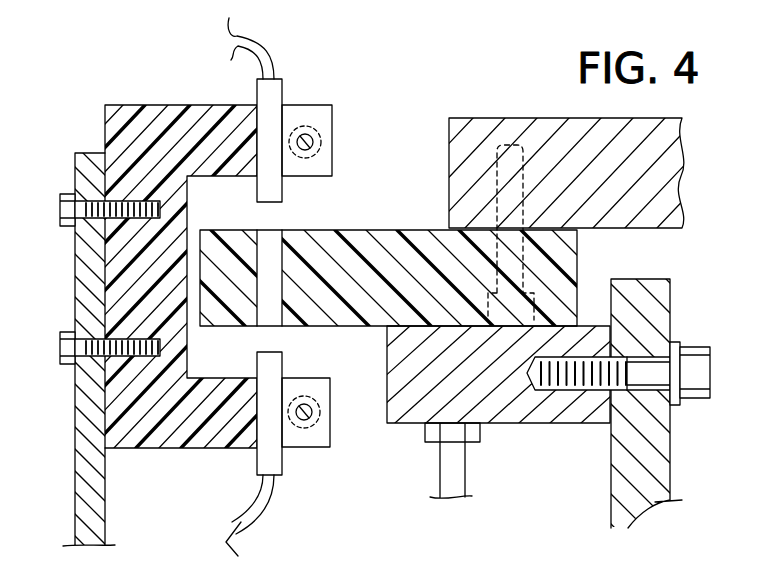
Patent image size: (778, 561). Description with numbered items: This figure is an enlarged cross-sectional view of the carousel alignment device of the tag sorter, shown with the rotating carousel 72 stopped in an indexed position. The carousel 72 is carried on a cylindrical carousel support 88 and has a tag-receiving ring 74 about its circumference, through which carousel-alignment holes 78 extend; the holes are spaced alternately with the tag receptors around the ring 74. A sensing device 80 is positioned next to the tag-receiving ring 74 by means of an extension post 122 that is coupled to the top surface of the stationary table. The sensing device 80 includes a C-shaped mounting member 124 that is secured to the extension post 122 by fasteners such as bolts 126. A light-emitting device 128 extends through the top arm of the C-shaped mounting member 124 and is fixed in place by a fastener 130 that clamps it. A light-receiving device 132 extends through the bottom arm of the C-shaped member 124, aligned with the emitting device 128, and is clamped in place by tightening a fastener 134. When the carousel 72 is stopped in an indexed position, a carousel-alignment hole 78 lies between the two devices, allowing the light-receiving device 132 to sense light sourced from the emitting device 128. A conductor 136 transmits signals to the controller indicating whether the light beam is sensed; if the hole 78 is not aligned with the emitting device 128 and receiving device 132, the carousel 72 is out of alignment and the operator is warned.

The rotating carousel 72 is at (477, 133).
The tag-receiving ring 74 is at (578, 262).
The carousel-alignment hole 78 is at (277, 247).
The sensing device 80 is at (145, 89).
The cylindrical carousel support 88 is at (668, 455).
The extension post 122 is at (82, 460).
The C-shaped mounting member 124 is at (105, 118).
The bolt 126 is at (63, 212).
The light-emitting device 128 is at (272, 92).
The fastener 130 is at (315, 137).
The light-receiving device 132 is at (283, 457).
The fastener 134 is at (318, 410).
The conductor 136 is at (250, 520).